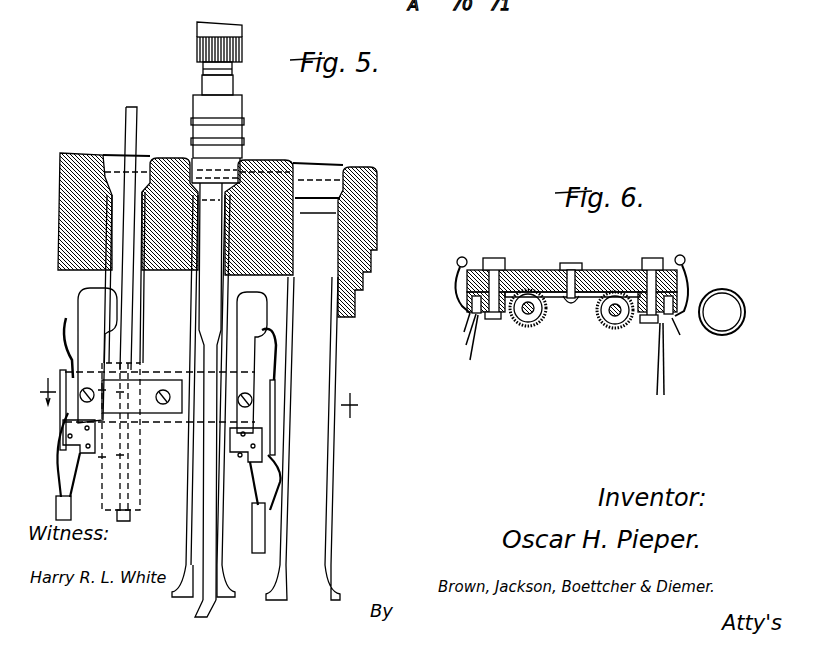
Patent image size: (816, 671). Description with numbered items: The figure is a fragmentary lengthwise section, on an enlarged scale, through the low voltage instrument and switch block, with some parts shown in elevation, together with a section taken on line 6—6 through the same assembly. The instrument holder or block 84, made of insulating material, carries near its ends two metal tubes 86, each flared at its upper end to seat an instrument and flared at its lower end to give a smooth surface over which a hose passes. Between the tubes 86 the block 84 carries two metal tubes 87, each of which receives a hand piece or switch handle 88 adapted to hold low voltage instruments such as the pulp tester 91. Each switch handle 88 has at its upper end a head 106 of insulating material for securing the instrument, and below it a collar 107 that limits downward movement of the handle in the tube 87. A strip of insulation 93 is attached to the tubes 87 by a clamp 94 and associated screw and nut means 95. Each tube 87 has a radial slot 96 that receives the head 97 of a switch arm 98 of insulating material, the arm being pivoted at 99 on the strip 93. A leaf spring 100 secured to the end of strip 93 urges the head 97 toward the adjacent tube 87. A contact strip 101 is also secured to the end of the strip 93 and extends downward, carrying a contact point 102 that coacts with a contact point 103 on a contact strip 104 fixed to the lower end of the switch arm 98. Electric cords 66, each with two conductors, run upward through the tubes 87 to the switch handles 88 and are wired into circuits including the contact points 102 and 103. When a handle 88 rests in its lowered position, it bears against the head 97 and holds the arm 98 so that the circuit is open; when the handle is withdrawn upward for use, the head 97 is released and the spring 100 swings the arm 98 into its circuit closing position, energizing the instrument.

In FIG. 5, the section line 6— 6 is at (201, 398).
In FIG. 5, the electric cord 66 is at (126, 126).
In FIG. 6, the electric cord 66 is at (528, 315).
In FIG. 5, the instrument holder or block 84 is at (377, 205).
In FIG. 5, the metal tube 86 is at (338, 366).
In FIG. 6, the metal tube 86 is at (745, 313).
In FIG. 5, the metal tube 87 is at (140, 489).
In FIG. 6, the metal tube 87 is at (524, 322).
In FIG. 5, the switch handle 88 is at (224, 182).
In FIG. 5, the pulp tester 91 is at (241, 28).
In FIG. 5, the strip of insulation 93 is at (152, 372).
In FIG. 6, the strip of insulation 93 is at (528, 271).
In FIG. 5, the clamp 94 is at (176, 416).
In FIG. 6, the clamp 94 is at (556, 296).
In FIG. 5, the screw and nut means 95 is at (165, 393).
In FIG. 6, the screw and nut means 95 is at (577, 272).
In FIG. 5, the radial slot 96 is at (107, 286).
In FIG. 5, the head 97 is at (96, 311).
In FIG. 5, the switch arm 98 is at (83, 362).
In FIG. 6, the switch arm 98 is at (488, 314).
In FIG. 5, the pivot 99 is at (92, 402).
In FIG. 6, the pivot 99 is at (493, 319).
In FIG. 5, the leaf spring 100 is at (70, 336).
In FIG. 6, the leaf spring 100 is at (460, 292).
In FIG. 5, the contact strip 101 is at (262, 445).
In FIG. 6, the contact strip 101 is at (470, 300).
In FIG. 5, the contact point 102 is at (291, 489).
In FIG. 6, the contact point 102 is at (470, 306).
In FIG. 5, the contact point 103 is at (162, 484).
In FIG. 6, the contact point 103 is at (474, 314).
In FIG. 5, the contact strip 104 is at (97, 450).
In FIG. 6, the contact strip 104 is at (478, 318).
In FIG. 5, the head 106 is at (197, 46).
In FIG. 5, the collar 107 is at (241, 108).